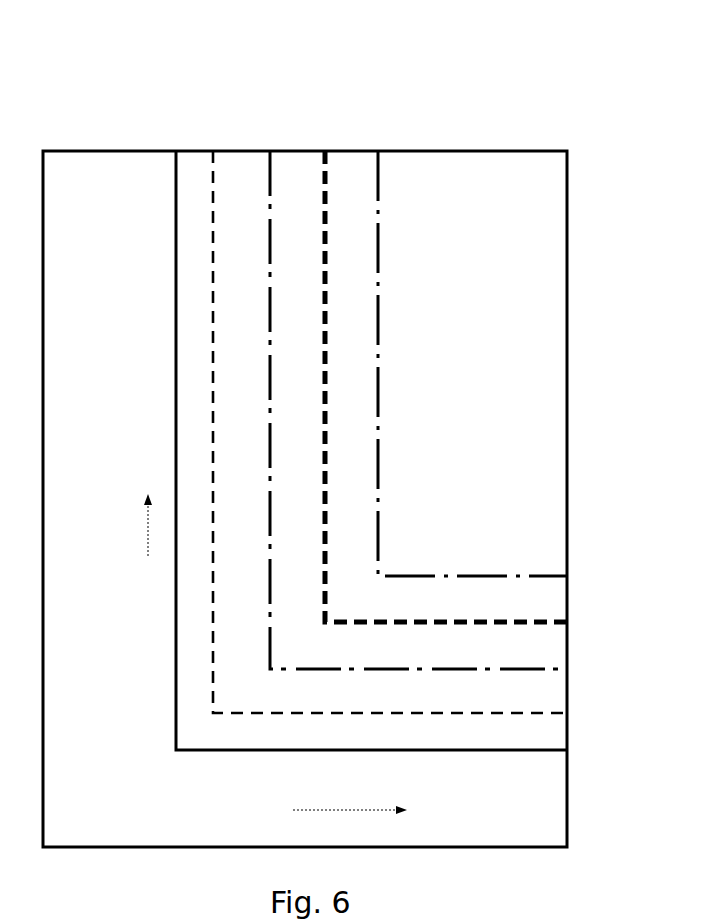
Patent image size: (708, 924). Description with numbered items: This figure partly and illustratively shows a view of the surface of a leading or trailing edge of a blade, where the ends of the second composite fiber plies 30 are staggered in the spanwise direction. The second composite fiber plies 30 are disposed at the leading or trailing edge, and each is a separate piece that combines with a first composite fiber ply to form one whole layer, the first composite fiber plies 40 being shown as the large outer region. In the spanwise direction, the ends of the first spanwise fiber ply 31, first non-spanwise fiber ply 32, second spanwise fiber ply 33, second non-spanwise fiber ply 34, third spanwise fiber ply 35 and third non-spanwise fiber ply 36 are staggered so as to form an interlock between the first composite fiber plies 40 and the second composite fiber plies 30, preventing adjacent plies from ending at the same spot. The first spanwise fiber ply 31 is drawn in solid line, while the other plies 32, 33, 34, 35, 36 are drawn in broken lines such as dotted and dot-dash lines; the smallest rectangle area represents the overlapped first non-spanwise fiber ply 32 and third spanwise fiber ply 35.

The second composite fiber plies 30 is at (513, 124).
The first composite fiber plies 40 is at (81, 141).
The first spanwise fiber ply 31 is at (177, 158).
The second non-spanwise fiber ply 34 is at (213, 153).
The second spanwise fiber ply 33 is at (272, 150).
The third non-spanwise fiber ply 36 is at (325, 150).
The first non-spanwise fiber ply 32 is at (380, 150).
The third spanwise fiber ply 35 is at (472, 363).